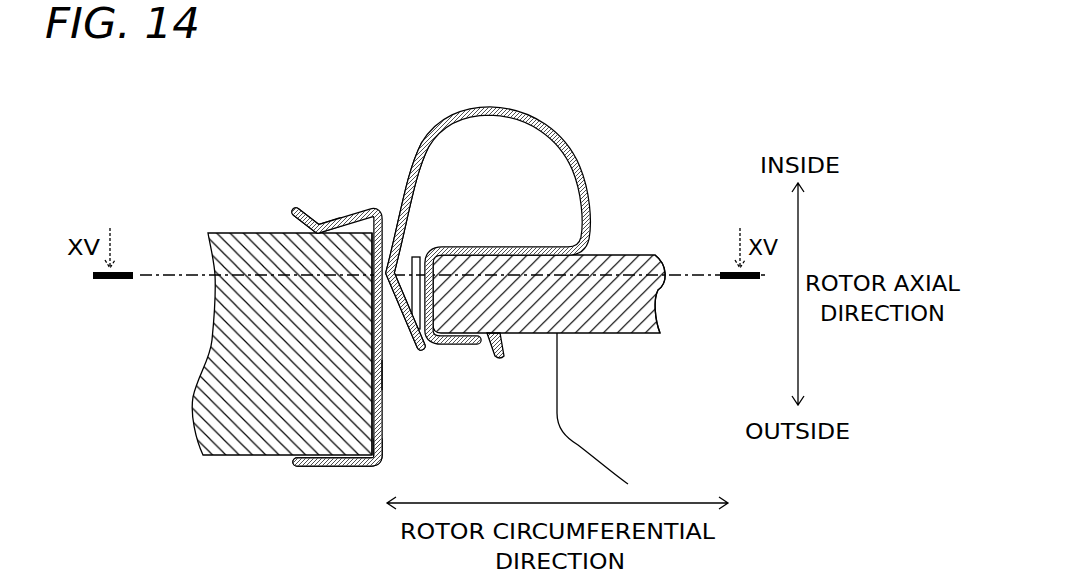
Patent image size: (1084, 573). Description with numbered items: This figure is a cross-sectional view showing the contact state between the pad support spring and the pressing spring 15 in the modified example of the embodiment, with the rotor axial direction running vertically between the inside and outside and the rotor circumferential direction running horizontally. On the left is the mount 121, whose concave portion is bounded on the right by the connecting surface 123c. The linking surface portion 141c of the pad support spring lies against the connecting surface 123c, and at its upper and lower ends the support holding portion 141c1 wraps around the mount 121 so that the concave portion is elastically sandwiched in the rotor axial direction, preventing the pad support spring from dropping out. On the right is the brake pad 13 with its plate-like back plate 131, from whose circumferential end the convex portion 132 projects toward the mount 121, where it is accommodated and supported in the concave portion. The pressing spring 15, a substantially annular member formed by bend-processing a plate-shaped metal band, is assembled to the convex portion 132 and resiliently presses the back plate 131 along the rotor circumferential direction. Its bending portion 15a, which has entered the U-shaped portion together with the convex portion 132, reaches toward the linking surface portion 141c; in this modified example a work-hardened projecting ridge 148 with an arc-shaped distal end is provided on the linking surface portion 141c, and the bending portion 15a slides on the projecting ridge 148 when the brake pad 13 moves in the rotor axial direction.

The brake pad 13 is at (670, 230).
The pressing spring 15 is at (369, 209).
The bending portion 15a is at (383, 275).
The mount 121 is at (200, 207).
The connecting surface 123c is at (372, 408).
The back plate 131 is at (658, 310).
The convex portion 132 is at (526, 336).
The linking surface portion 141c is at (376, 347).
The support holding portion 141c1 is at (320, 230).
The projecting ridge 148 is at (384, 373).